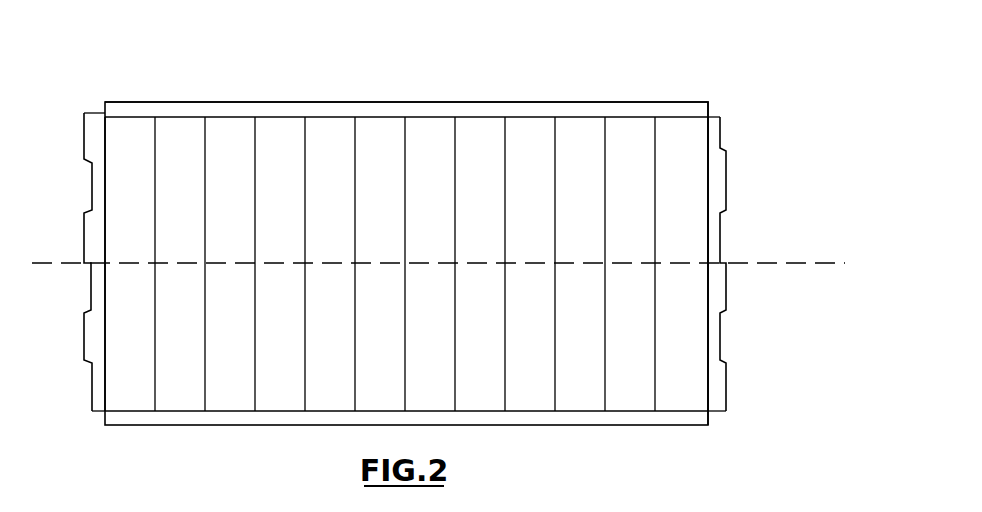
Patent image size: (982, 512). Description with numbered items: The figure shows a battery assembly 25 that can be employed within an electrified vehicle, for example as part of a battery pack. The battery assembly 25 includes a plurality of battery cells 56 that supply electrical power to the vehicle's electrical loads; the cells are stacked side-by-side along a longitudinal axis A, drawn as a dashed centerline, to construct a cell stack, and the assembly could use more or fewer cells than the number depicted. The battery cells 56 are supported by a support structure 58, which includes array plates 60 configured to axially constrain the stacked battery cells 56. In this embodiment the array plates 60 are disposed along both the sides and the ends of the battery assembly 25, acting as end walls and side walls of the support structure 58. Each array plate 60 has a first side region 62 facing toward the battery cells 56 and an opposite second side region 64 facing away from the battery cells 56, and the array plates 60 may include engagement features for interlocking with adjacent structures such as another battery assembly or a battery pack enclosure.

The battery assembly 25 is at (400, 79).
The battery cells 56 is at (181, 131).
The support structure 58 is at (714, 100).
The array plates 60 is at (540, 110).
The first side region 62 is at (112, 191).
The second side region 64 is at (85, 196).
The longitudinal axis A is at (782, 263).